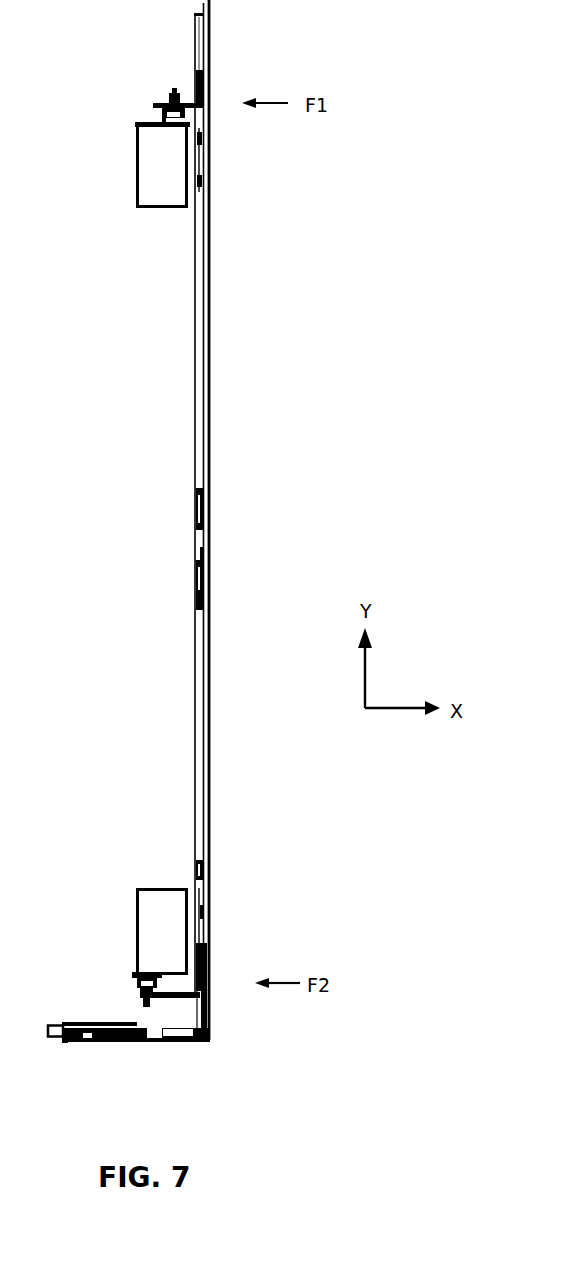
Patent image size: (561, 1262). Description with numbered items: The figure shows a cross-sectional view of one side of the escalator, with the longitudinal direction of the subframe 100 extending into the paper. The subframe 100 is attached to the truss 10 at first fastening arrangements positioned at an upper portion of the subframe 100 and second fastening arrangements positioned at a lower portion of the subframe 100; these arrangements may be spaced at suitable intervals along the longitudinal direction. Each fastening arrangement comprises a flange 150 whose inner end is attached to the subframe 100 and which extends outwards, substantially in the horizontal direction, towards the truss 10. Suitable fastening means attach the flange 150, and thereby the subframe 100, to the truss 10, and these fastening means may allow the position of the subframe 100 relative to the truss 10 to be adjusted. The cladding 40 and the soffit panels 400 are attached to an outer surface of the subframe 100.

The truss 10 is at (165, 192).
The cladding 40 is at (208, 437).
The subframe 100 is at (197, 448).
The flange 150 is at (160, 104).
The soffit panels 400 is at (208, 1010).